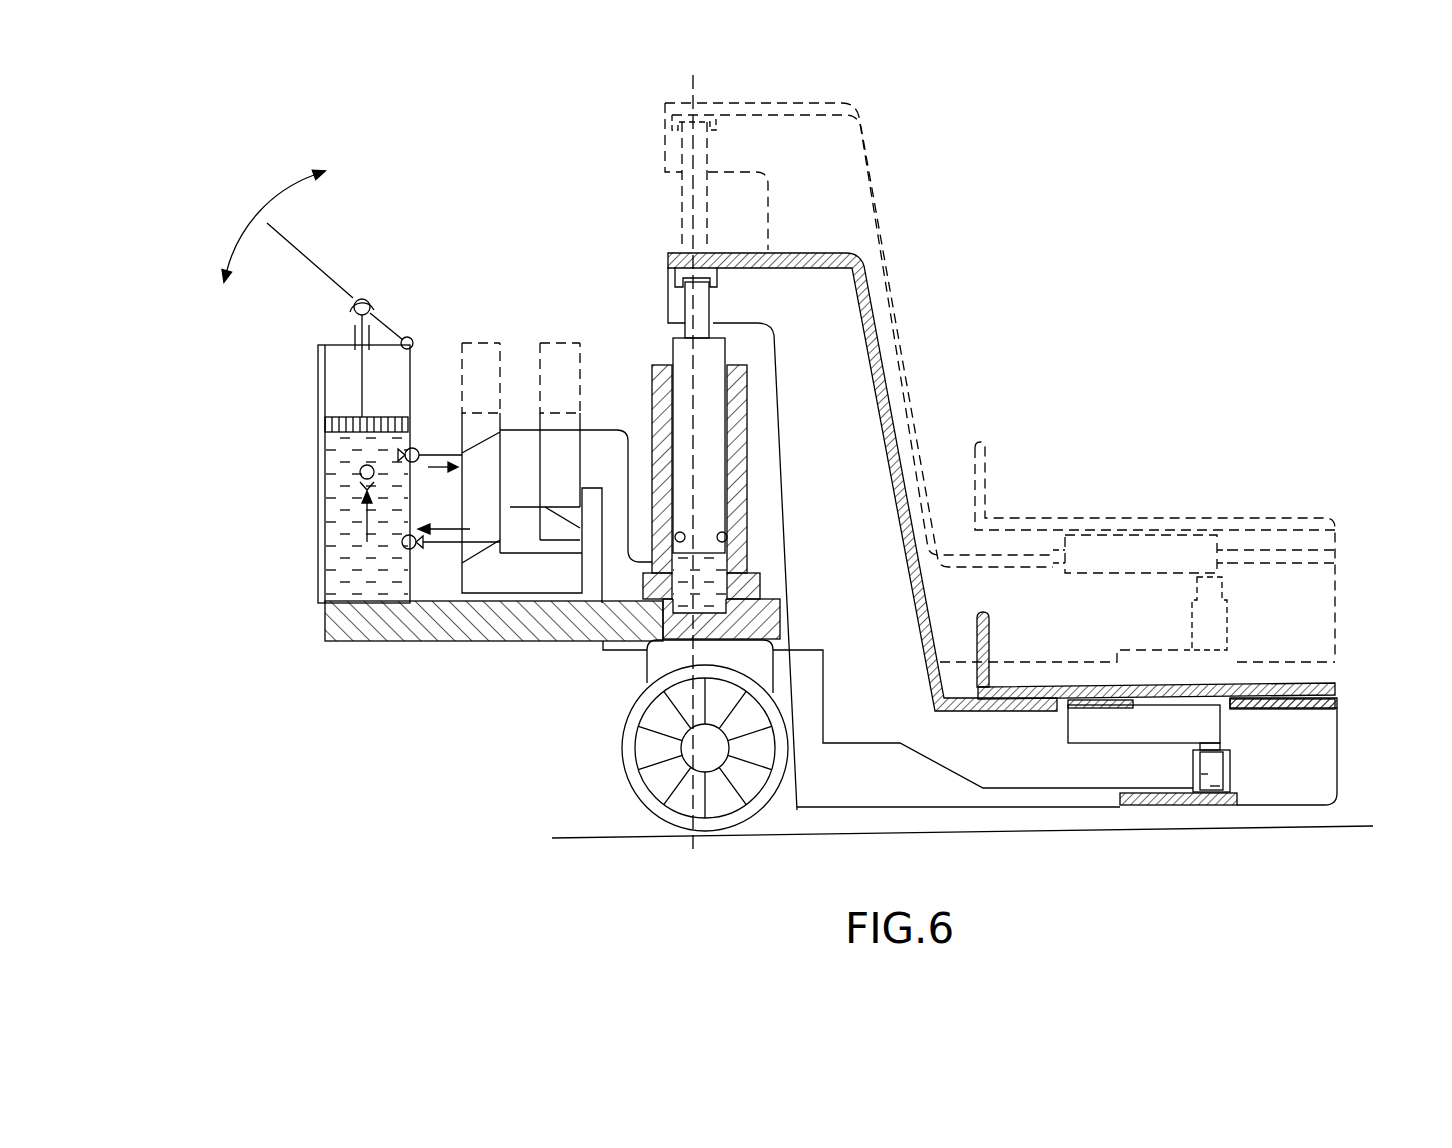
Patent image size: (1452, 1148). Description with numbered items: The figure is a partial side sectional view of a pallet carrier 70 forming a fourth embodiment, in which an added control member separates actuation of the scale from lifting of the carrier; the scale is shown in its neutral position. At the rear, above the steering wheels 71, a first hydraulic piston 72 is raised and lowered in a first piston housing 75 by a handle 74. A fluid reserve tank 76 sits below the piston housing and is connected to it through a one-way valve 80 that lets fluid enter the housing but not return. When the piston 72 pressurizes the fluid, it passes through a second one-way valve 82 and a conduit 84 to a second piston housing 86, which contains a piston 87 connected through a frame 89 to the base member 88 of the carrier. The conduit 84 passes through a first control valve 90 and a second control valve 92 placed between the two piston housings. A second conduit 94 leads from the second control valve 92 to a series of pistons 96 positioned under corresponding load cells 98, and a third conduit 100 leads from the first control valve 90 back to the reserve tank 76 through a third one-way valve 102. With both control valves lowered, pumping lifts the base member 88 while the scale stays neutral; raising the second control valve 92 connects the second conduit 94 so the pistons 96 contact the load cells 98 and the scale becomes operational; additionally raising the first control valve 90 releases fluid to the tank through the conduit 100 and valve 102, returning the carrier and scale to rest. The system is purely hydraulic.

The pallet carrier 70 is at (258, 196).
The handle 74 is at (310, 256).
The second one-way valve 82 is at (415, 448).
The first hydraulic piston 72 is at (324, 403).
The first piston housing 75 is at (327, 448).
The one-way valve 80 is at (360, 476).
The fluid reserve tank 76 is at (340, 551).
The third one-way valve 102 is at (380, 578).
The third conduit 100 is at (460, 603).
The first control valve 90 is at (480, 343).
The second control valve 92 is at (568, 343).
The conduit 84 is at (618, 428).
The piston 87 is at (713, 400).
The second piston housing 86 is at (723, 583).
The frame 89 is at (878, 233).
The base member 88 is at (1340, 717).
The load cells 98 is at (1080, 735).
The pistons 96 is at (1212, 765).
The second conduit 94 is at (608, 653).
The steering wheels 71 is at (683, 800).